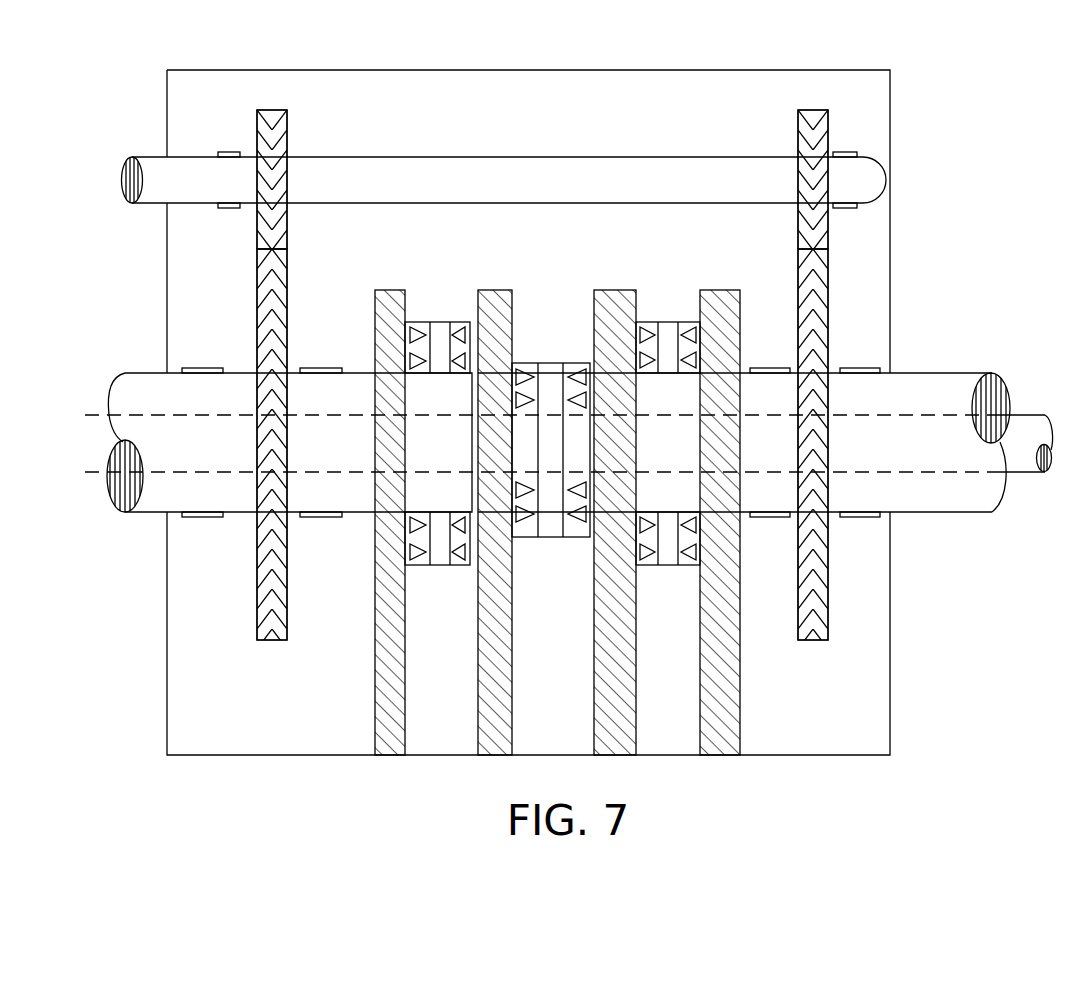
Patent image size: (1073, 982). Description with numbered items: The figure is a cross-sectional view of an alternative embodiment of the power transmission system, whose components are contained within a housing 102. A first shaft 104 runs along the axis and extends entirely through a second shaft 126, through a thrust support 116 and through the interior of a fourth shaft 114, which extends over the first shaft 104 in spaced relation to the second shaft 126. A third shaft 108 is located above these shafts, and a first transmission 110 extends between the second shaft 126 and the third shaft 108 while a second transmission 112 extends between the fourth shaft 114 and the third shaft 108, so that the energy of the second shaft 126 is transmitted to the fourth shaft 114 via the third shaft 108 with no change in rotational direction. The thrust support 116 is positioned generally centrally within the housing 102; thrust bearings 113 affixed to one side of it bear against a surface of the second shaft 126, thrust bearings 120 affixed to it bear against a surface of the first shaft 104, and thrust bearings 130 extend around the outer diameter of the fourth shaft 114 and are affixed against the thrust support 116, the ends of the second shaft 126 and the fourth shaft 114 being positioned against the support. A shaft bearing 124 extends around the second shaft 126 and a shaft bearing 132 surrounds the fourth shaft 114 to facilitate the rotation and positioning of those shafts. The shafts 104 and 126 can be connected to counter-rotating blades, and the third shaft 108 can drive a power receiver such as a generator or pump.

The housing 102 is at (761, 68).
The first shaft 104 is at (1047, 481).
The third shaft 108 is at (652, 155).
The first transmission 110 is at (831, 323).
The second transmission 112 is at (254, 259).
The thrust bearings 113 is at (662, 320).
The fourth shaft 114 is at (150, 520).
The thrust support 116 is at (516, 727).
The thrust bearings 120 is at (549, 361).
The shaft bearing 124 is at (867, 522).
The second shaft 126 is at (945, 370).
The thrust bearings 130 is at (434, 320).
The shaft bearing 132 is at (209, 523).